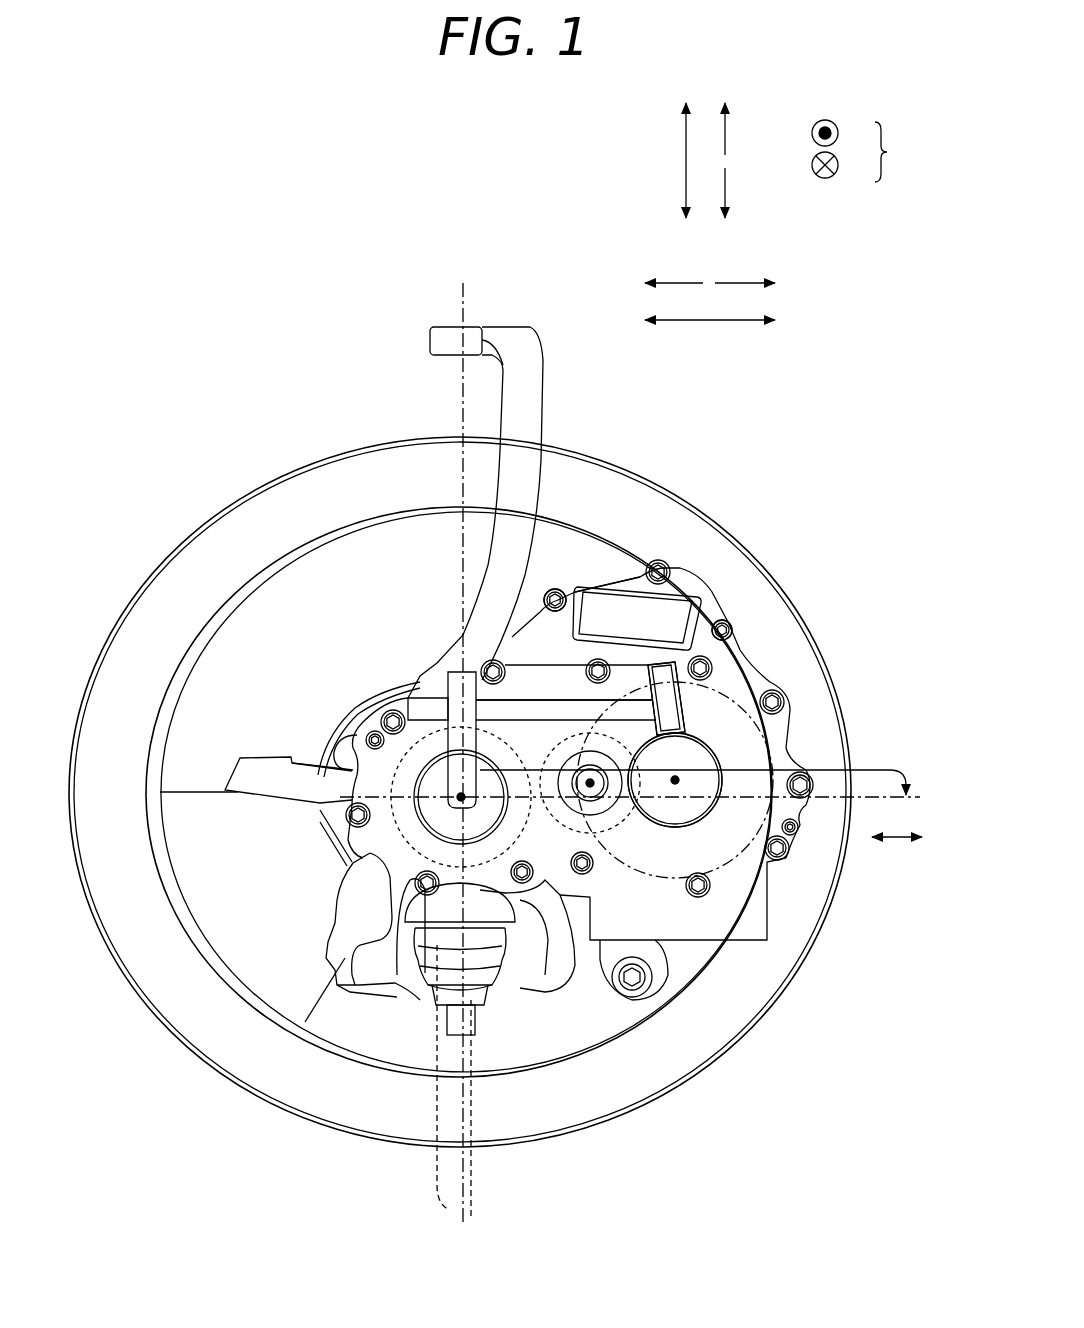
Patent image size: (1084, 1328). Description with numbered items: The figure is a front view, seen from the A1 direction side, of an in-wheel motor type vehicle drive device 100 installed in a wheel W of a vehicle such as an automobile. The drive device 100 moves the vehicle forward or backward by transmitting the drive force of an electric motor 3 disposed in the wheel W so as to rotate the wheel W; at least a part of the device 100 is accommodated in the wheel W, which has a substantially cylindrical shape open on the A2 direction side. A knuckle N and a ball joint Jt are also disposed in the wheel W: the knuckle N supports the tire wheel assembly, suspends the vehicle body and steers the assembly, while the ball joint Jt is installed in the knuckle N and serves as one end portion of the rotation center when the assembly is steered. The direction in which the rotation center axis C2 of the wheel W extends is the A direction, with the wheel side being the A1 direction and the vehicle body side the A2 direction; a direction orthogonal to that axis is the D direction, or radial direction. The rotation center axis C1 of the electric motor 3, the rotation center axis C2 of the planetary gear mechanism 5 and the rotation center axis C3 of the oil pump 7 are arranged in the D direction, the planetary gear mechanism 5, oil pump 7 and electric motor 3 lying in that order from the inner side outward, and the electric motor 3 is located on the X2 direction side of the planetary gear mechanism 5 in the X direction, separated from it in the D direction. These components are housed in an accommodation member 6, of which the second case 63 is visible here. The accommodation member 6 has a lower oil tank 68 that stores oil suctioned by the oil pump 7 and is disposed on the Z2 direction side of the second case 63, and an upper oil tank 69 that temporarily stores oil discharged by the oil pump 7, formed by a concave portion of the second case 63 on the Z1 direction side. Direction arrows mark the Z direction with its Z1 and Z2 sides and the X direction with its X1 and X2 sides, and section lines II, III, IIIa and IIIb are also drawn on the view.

The wheel W is at (722, 527).
The knuckle N is at (533, 415).
The electric motor 3 is at (782, 738).
The accommodation member 6 is at (558, 588).
The in-wheel motor type vehicle drive device 100 is at (598, 576).
The upper oil tank 69 is at (638, 587).
The second case 63 is at (738, 685).
The planetary gear mechanism 5 is at (512, 712).
The oil pump 7 is at (577, 750).
The rotation center axis of the electric motor C1 is at (677, 785).
The rotation center axis of the wheel C2 is at (455, 793).
The rotation center axis of the oil pump C3 is at (588, 795).
The section line IIIb is at (690, 764).
The section line IIIa is at (419, 1077).
The ball joint Jt is at (480, 968).
The lower oil tank 68 is at (705, 947).
The section line II is at (510, 300).
The section line III is at (420, 1210).
The D direction D is at (897, 822).
The vertical direction Z is at (699, 160).
The Z1 direction Z1 is at (745, 129).
The Z2 direction Z2 is at (745, 193).
The X direction X is at (710, 306).
The forward direction X1 is at (674, 269).
The X2 direction X2 is at (745, 269).
The A direction A is at (894, 152).
The A1 direction A1 is at (841, 134).
The A2 direction A2 is at (841, 166).